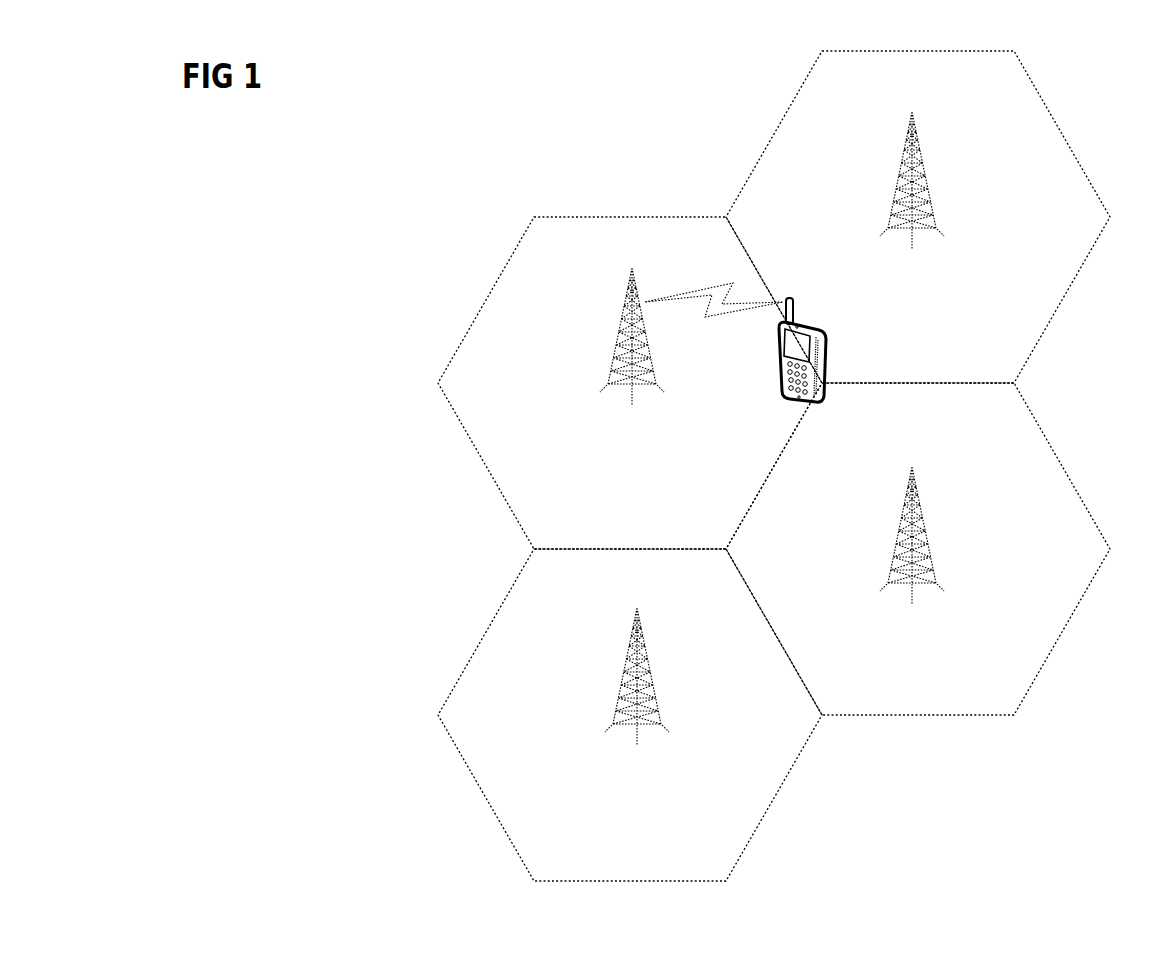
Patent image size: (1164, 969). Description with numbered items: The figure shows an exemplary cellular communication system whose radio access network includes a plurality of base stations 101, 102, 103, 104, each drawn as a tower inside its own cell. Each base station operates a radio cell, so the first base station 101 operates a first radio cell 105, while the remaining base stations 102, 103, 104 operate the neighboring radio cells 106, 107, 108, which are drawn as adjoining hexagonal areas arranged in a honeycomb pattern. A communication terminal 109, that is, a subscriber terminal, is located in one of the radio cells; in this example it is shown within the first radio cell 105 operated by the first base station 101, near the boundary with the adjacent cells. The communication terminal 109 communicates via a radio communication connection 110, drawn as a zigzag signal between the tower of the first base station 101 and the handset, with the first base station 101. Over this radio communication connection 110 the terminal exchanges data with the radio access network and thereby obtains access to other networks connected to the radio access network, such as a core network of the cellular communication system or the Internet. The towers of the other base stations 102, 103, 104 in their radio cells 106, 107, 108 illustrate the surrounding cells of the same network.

The first base station 101 is at (627, 315).
The base station 102 is at (908, 162).
The base station 103 is at (634, 660).
The base station 104 is at (908, 518).
The first radio cell 105 is at (610, 218).
The radio cell 106 is at (1065, 137).
The radio cell 107 is at (797, 758).
The radio cell 108 is at (1067, 468).
The communication terminal 109 is at (819, 322).
The radio communication connection 110 is at (724, 287).